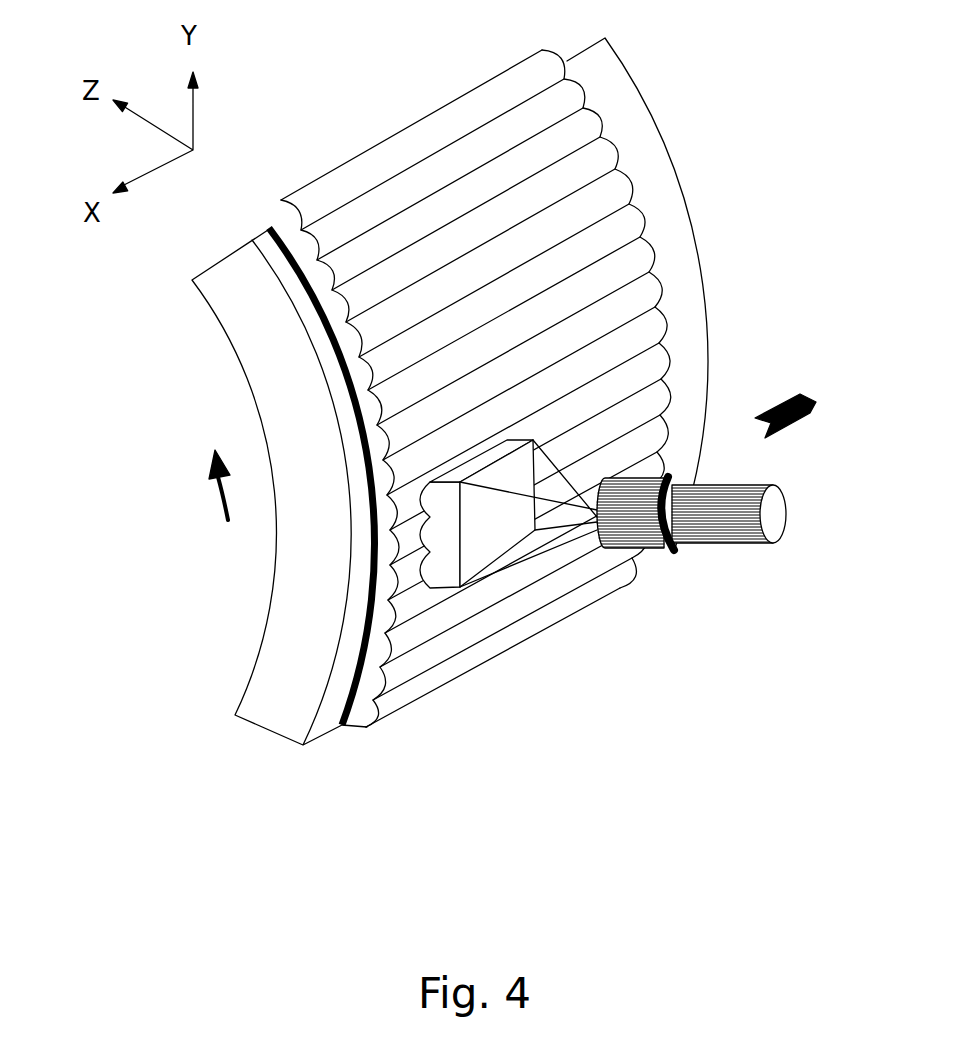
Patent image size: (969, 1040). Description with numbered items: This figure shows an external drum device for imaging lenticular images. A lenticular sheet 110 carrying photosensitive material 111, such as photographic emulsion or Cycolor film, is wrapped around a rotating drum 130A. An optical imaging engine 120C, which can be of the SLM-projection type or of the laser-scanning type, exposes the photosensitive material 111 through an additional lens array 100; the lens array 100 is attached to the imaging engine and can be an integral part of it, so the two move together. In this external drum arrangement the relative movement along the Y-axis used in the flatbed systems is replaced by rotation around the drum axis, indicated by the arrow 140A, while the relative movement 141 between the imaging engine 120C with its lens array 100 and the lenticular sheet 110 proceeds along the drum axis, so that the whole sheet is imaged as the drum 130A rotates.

The lens array 100 is at (495, 550).
The lenticular sheet 110 is at (417, 660).
The photosensitive material 111 is at (343, 730).
The optical imaging engine 120C is at (700, 547).
The rotating drum 130A is at (280, 705).
The rotation around the drum axis 140A is at (217, 475).
The relative movement 141 is at (780, 398).